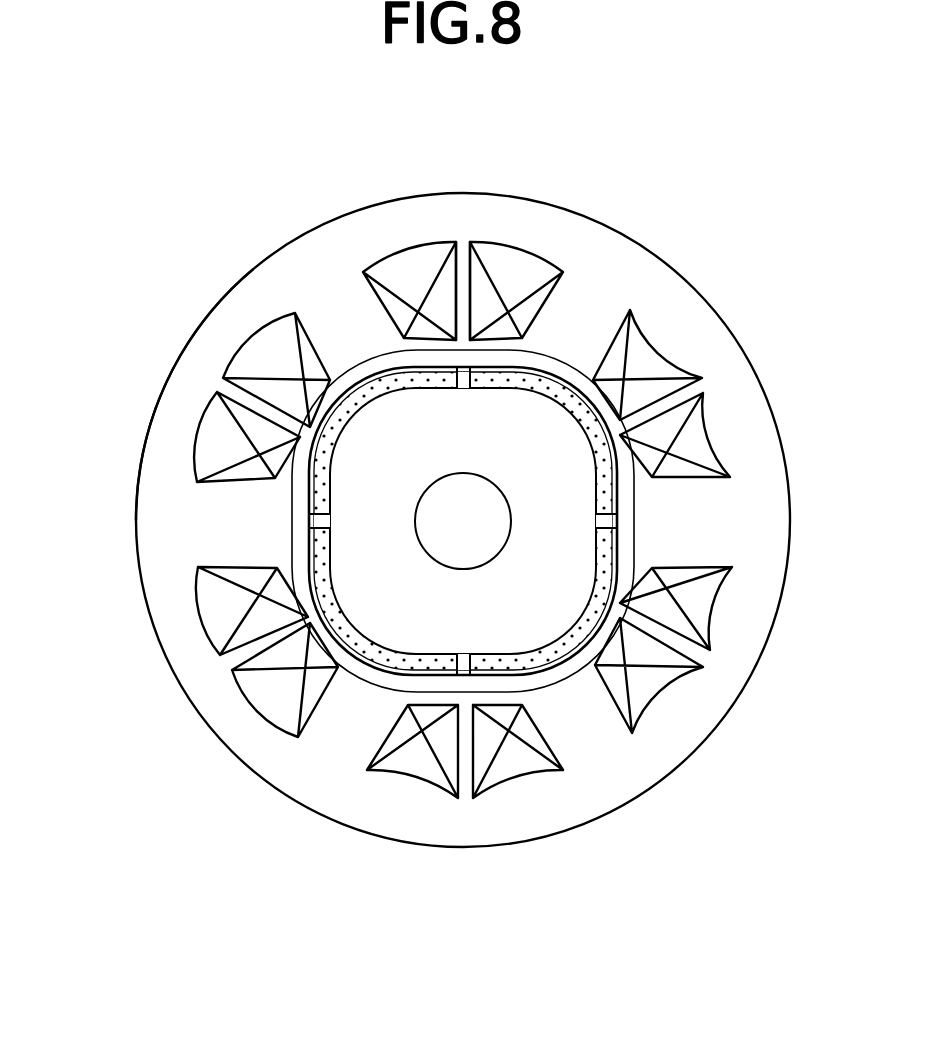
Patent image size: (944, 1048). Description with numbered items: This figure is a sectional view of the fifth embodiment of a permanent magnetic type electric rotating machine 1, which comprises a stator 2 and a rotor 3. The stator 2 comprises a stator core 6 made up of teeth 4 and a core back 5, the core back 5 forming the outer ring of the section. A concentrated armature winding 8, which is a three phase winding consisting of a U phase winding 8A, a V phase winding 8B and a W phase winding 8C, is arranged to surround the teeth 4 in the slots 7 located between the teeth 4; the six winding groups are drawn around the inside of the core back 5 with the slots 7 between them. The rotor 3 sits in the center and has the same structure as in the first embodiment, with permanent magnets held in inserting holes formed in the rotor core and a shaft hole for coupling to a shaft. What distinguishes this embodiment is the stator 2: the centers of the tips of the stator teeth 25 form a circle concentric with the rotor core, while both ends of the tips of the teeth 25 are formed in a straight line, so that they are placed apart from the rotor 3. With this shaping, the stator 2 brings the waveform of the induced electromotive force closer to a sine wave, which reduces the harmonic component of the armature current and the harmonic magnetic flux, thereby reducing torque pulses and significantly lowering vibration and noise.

The permanent magnetic type electric rotating machine 1 is at (712, 297).
The stator 2 is at (160, 392).
The rotor 3 is at (632, 527).
The teeth 4 is at (193, 513).
The core back 5 is at (213, 343).
The stator core 6 is at (162, 445).
The slots 7 is at (463, 245).
The concentrated armature winding 8 is at (458, 523).
The U phase winding 8A is at (400, 267).
The V phase winding 8B is at (532, 270).
The W phase winding 8C is at (703, 433).
The tips of stator teeth 25 is at (290, 533).